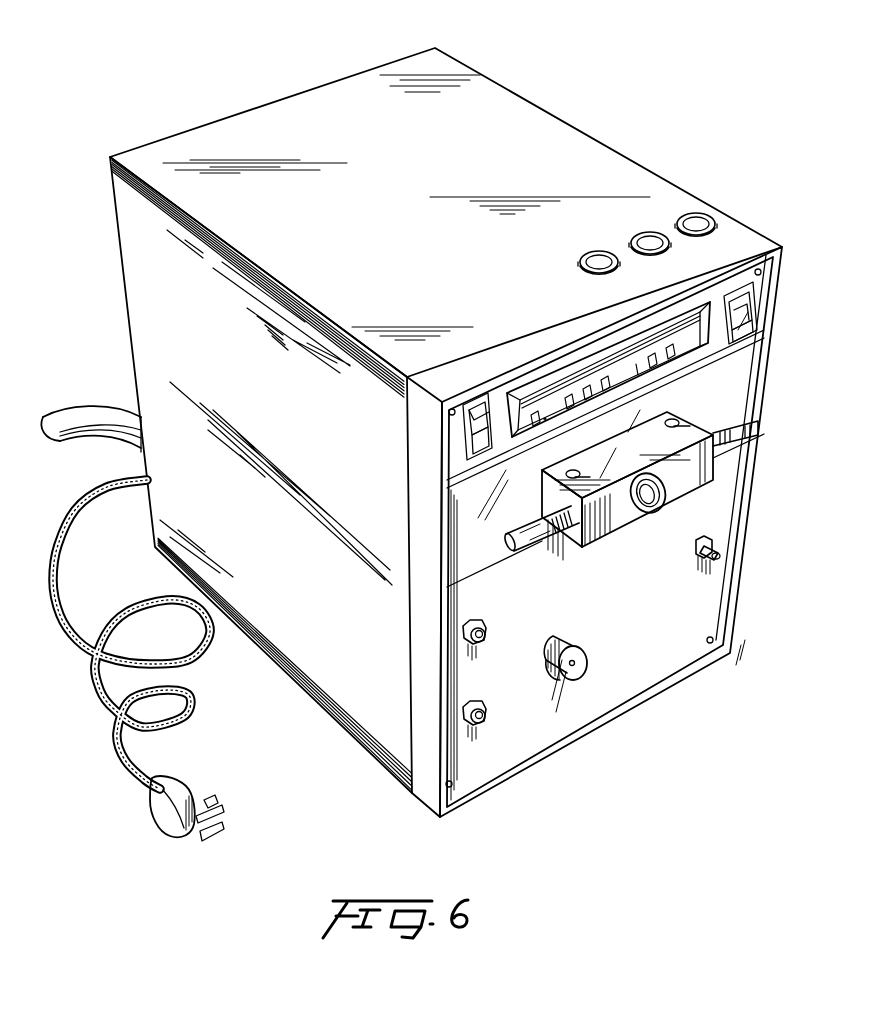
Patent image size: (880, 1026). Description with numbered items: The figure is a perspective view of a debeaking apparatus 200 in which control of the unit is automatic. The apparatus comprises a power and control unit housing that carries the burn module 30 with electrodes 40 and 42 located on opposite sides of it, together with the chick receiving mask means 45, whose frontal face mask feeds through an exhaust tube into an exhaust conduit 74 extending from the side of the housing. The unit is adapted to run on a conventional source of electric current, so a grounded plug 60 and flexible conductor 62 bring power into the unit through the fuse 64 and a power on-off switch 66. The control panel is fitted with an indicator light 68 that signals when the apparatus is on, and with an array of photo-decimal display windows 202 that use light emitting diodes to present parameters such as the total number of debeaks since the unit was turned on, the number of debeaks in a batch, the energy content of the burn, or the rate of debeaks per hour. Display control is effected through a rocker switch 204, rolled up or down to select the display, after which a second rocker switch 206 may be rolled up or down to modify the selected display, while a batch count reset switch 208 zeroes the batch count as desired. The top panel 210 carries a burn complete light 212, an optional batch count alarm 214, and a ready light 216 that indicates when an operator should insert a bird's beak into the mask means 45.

The debeaking apparatus 200 is at (622, 104).
The top panel 210 is at (300, 118).
The burn complete light 212 is at (603, 258).
The batch count alarm 214 is at (652, 241).
The ready light 216 is at (701, 223).
The photo-decimal display windows 202 is at (700, 300).
The rocker switch 204 is at (468, 432).
The second rocker switch 206 is at (748, 318).
The burn module 30 is at (705, 415).
The electrode 40 is at (753, 430).
The electrode 42 is at (526, 546).
The mask means 45 is at (644, 518).
The power on-off switch 66 is at (720, 556).
The fuse 64 is at (573, 665).
The indicator light 68 is at (486, 640).
The batch count reset switch 208 is at (487, 718).
The exhaust conduit 74 is at (78, 410).
The flexible conductor 62 is at (120, 750).
The grounded plug 60 is at (172, 813).